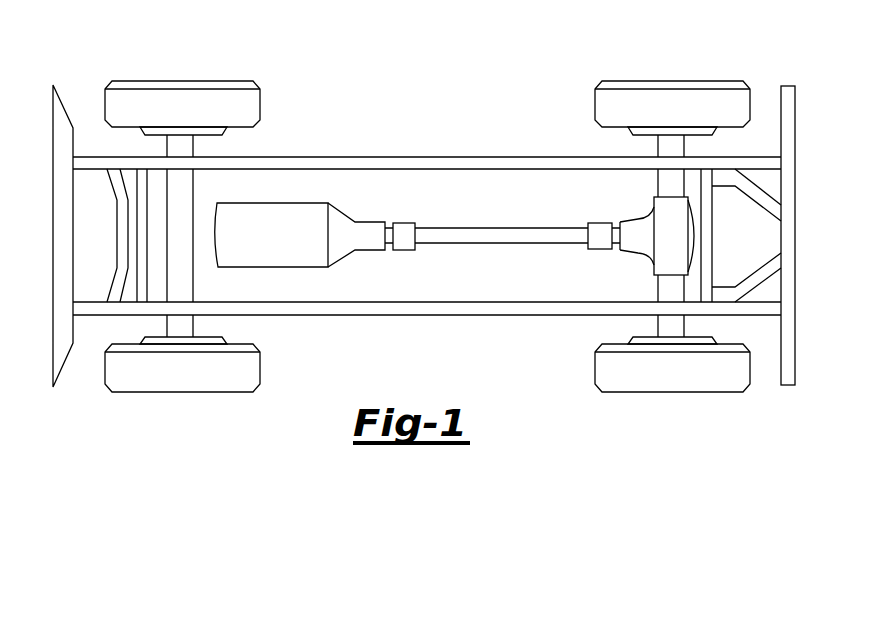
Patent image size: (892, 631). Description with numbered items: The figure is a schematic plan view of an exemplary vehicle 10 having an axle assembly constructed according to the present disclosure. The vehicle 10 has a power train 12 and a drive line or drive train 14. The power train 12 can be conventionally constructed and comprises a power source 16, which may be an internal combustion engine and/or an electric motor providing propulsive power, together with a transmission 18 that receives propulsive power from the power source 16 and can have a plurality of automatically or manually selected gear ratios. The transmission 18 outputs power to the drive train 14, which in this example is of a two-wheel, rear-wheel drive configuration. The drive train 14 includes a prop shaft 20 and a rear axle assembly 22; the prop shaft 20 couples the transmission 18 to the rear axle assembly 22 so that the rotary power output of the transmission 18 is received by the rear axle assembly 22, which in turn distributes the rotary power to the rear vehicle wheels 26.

The vehicle 10 is at (372, 86).
The power train 12 is at (311, 291).
The drive train 14 is at (609, 207).
The power source 16 is at (282, 249).
The transmission 18 is at (338, 230).
The prop shaft 20 is at (462, 244).
The rear axle assembly 22 is at (636, 266).
The rear vehicle wheels 26 is at (597, 103).